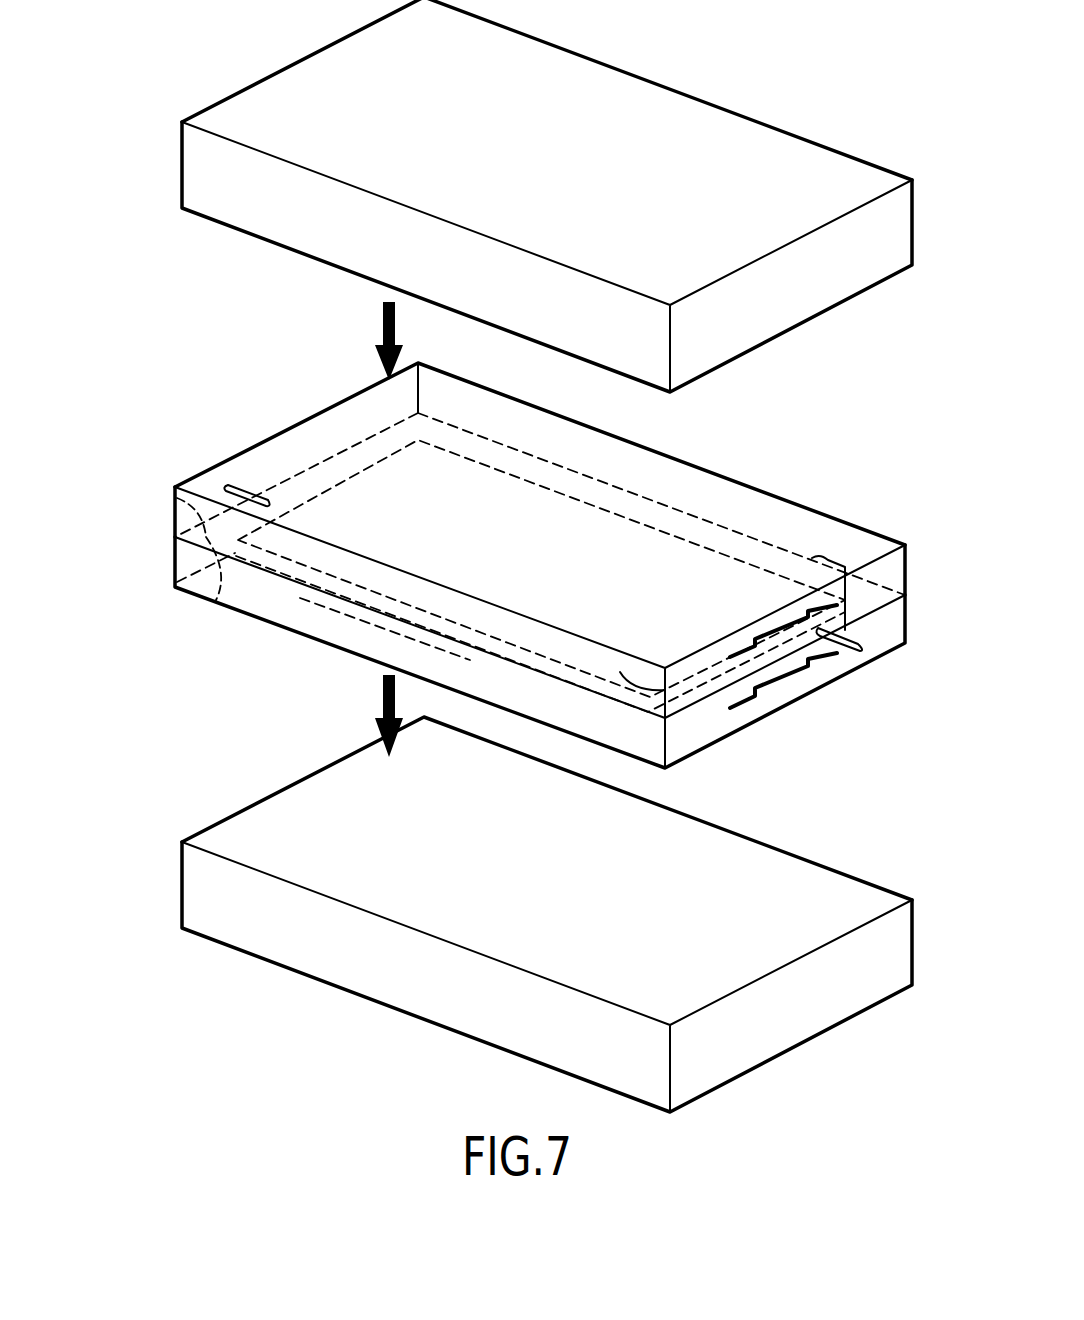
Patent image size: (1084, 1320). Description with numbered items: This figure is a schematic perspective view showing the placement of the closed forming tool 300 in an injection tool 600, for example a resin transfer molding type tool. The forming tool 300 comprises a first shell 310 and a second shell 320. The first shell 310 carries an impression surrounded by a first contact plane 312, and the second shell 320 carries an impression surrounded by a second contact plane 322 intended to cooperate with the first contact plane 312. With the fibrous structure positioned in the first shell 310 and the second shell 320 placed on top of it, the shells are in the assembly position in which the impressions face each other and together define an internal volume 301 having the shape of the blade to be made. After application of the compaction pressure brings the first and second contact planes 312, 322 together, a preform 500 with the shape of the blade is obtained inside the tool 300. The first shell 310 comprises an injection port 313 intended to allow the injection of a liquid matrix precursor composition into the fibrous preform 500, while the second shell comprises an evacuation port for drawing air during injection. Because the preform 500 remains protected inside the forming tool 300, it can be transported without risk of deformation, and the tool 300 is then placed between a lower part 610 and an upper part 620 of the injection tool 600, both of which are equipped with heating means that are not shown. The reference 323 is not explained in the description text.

The injection tool 600 is at (105, 405).
The upper part 620 is at (250, 250).
The lower part 610 is at (211, 804).
The forming tool 300 is at (546, 565).
The second shell 320 is at (515, 540).
The first shell 310 is at (560, 625).
The second contact plane 322 is at (174, 505).
The upper case pin 323 is at (244, 490).
The first contact plane 312 is at (220, 588).
The injection port 313 is at (846, 652).
The preform 500 is at (517, 476).
The internal volume 301 is at (411, 603).